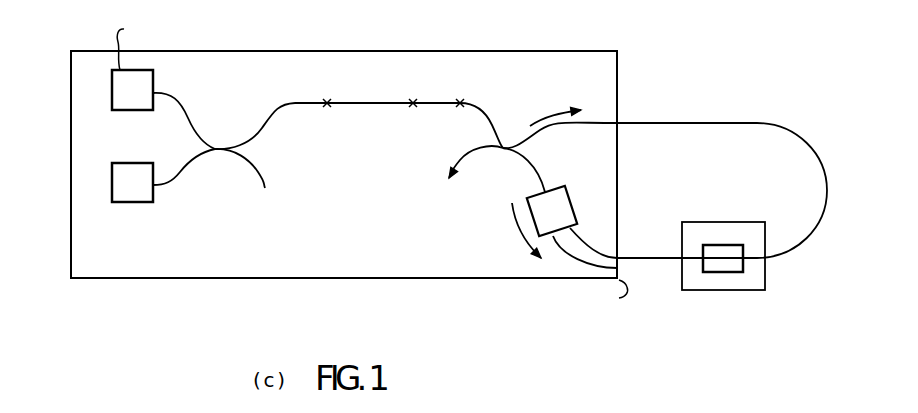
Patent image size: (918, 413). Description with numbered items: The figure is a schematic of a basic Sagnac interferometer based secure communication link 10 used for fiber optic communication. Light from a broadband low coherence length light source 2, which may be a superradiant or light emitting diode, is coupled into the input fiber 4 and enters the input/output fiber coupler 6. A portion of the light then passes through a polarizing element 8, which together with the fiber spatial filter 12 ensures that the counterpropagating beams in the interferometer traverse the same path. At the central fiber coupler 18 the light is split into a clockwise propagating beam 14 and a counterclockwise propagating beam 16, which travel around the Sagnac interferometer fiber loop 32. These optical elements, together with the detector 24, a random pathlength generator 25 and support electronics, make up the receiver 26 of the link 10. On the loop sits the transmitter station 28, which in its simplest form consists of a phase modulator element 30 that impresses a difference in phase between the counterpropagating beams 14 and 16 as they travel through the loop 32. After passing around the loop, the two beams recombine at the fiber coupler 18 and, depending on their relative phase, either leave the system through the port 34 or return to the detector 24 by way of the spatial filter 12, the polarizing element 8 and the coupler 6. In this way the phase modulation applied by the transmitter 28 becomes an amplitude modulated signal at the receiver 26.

The broadband low coherence length light source 2 is at (112, 86).
The input fiber 4 is at (177, 101).
The input/output fiber coupler 6 is at (218, 147).
The polarizing element 8 is at (355, 103).
The Sagnac interferometer based secure communication link 10 is at (316, 320).
The fiber spatial filter 12 is at (430, 103).
The clockwise propagating beam 14 is at (550, 118).
The counterclockwise propagating beam 16 is at (510, 215).
The central fiber coupler 18 is at (503, 146).
The detector 24 is at (131, 203).
The random pathlength generator 25 is at (566, 185).
The receiver 26 is at (286, 40).
The transmitter station 28 is at (766, 282).
The phase modulator element 30 is at (713, 245).
The Sagnac interferometer fiber loop 32 is at (671, 178).
The port 34 is at (456, 162).